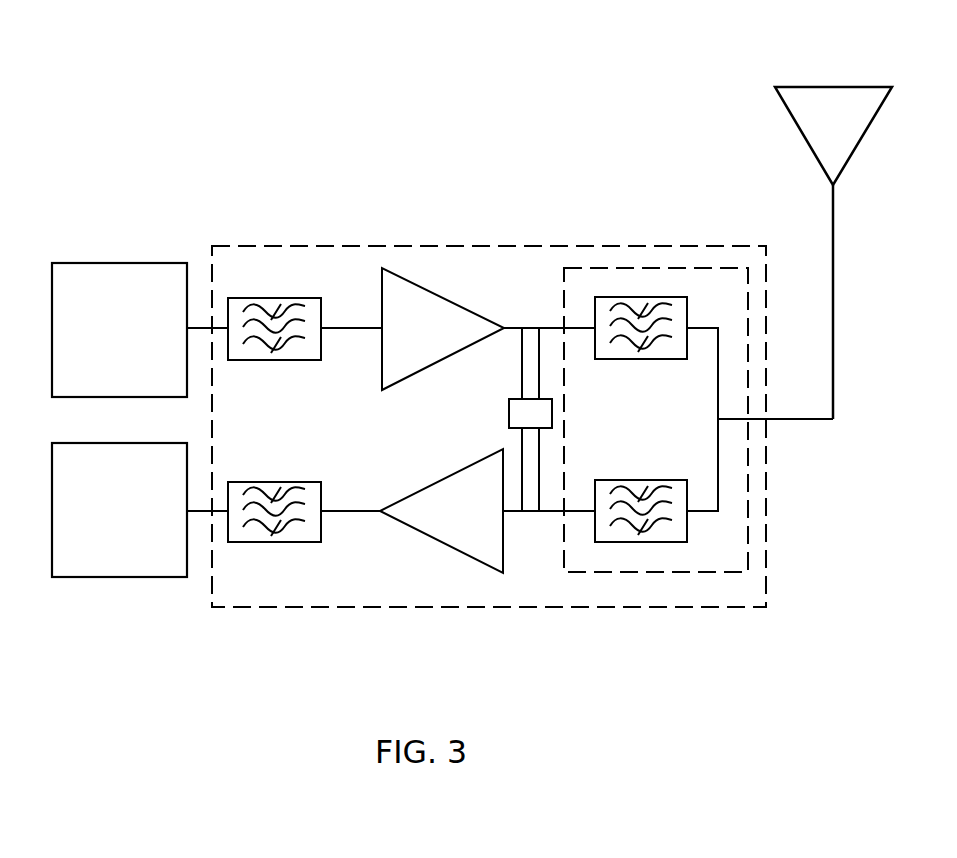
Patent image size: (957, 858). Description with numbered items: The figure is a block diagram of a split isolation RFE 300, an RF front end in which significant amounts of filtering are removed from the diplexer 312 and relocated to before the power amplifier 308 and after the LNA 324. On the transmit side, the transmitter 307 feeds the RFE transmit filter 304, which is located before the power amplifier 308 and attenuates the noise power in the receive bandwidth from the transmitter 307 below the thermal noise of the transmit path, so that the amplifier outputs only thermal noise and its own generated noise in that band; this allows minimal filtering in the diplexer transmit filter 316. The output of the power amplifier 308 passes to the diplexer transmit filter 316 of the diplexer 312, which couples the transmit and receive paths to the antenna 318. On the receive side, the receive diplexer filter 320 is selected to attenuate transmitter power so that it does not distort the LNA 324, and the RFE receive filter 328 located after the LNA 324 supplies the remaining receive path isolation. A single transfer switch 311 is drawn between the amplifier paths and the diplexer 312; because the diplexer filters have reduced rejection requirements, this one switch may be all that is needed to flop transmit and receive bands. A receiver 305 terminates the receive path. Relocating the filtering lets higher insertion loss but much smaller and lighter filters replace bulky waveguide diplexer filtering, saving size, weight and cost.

The split isolation RFE 300 is at (336, 216).
The RFE transmit filter 304 is at (275, 360).
The receiver 305 is at (117, 577).
The transmitter 307 is at (117, 263).
The power amplifier 308 is at (458, 303).
The transfer switch 311 is at (509, 415).
The diplexer 312 is at (587, 268).
The diplexer transmit filter 316 is at (648, 297).
The antenna 318 is at (825, 87).
The receive diplexer filter 320 is at (670, 542).
The LNA 324 is at (463, 552).
The RFE receive filter 328 is at (289, 542).